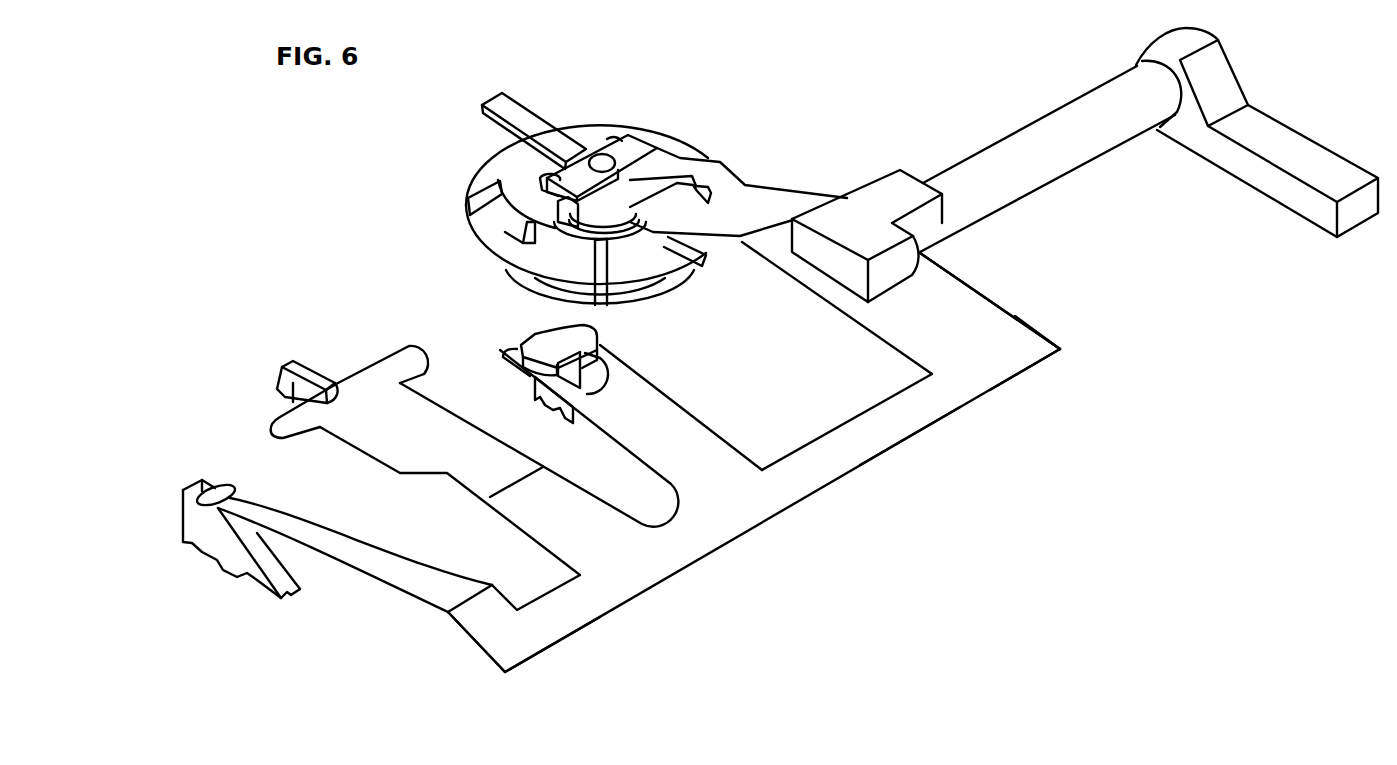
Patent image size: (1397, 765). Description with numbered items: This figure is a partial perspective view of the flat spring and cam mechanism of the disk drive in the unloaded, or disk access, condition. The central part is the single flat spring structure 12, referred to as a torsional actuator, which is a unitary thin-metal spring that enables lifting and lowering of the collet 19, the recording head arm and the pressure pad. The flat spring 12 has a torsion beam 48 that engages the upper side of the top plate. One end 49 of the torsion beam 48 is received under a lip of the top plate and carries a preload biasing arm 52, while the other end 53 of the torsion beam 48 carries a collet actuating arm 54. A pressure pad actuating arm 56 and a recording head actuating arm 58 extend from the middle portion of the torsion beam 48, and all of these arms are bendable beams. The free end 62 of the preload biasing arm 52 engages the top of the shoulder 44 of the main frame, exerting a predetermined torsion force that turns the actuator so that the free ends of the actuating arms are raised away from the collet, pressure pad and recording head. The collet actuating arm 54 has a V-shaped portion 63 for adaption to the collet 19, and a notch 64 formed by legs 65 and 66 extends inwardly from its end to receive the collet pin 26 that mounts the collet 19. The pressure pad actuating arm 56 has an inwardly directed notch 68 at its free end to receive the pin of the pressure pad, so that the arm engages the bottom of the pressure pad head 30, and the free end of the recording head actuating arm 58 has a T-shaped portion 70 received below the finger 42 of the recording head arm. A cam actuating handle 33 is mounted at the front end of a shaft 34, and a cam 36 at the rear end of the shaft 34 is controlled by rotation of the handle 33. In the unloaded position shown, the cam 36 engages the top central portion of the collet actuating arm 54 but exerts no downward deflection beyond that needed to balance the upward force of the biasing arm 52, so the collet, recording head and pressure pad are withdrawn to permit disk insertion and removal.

The flat spring structure 12 is at (750, 522).
The collet 19 is at (483, 228).
The collet pin 26 is at (507, 107).
The block 30 is at (578, 338).
The cam actuating handle 33 is at (1258, 173).
The shaft 34 is at (1012, 154).
The cam 36 is at (850, 226).
The finger 42 is at (309, 371).
The shoulder 44 is at (226, 548).
The torsion beam 48 is at (890, 440).
The end of torsion beam 49 is at (503, 667).
The preload biasing arm 52 is at (383, 578).
The other end of torsion beam 53 is at (1052, 350).
The collet actuating arm 54 is at (987, 318).
The pressure pad actuating arm 56 is at (677, 437).
The recording head actuating arm 58 is at (483, 478).
The free end of preload biasing arm 62 is at (230, 495).
The V-shaped portion 63 is at (745, 197).
The notch 64 is at (648, 163).
The leg 65 is at (540, 177).
The leg 66 is at (612, 146).
The notch 68 is at (605, 378).
The T-shaped portion 70 is at (420, 352).